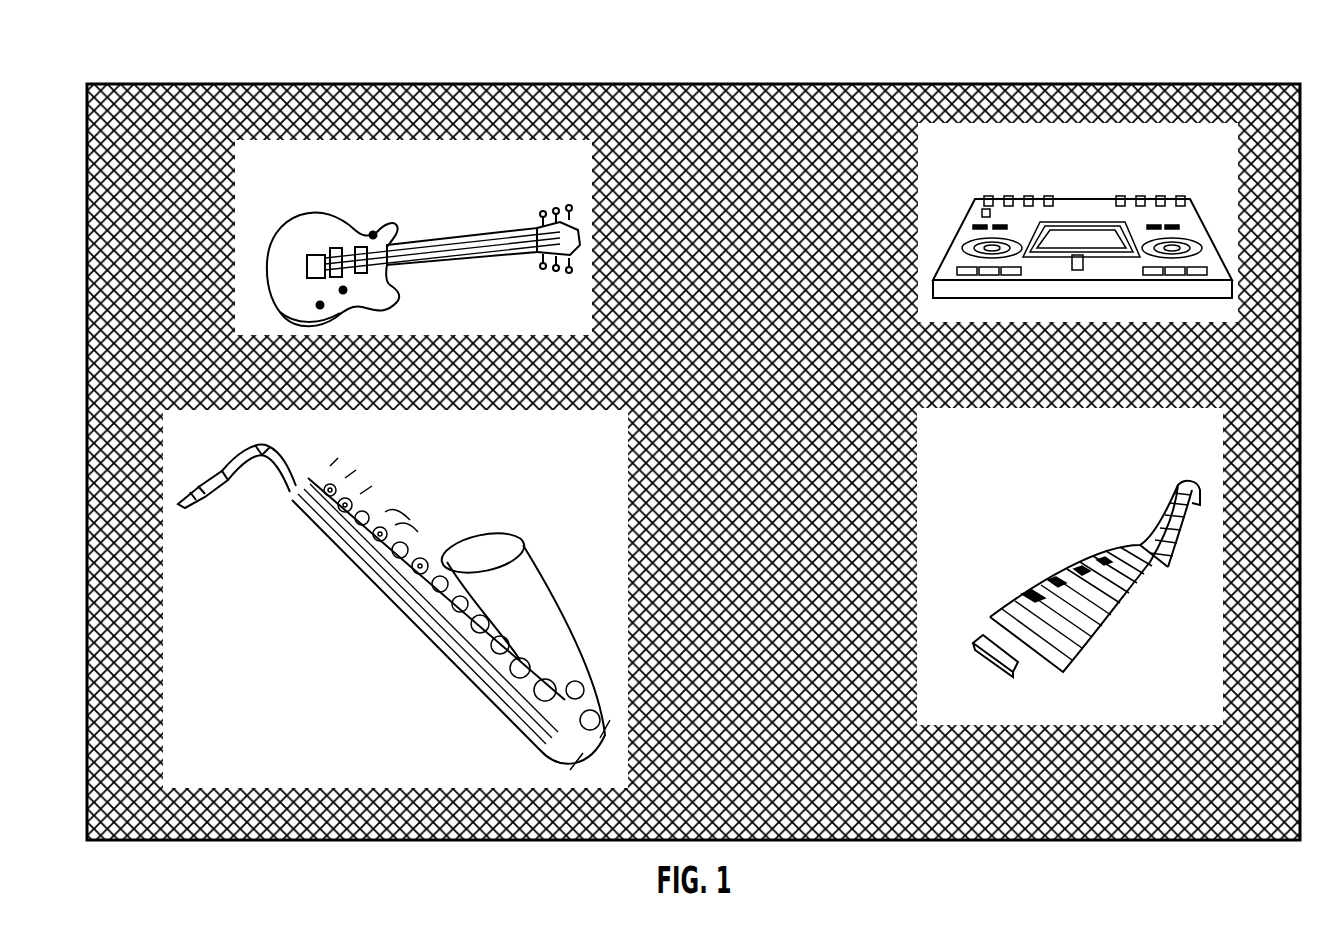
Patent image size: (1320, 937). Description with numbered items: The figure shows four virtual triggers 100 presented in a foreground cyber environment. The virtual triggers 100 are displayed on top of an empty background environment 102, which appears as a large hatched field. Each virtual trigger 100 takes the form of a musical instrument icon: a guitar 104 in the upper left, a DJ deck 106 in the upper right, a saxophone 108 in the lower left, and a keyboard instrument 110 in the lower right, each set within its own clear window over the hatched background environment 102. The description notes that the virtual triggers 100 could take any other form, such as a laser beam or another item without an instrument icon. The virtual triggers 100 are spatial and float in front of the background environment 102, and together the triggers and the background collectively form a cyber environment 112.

The virtual trigger 100 is at (474, 187).
The background environment 102 is at (742, 108).
The guitar 104 is at (337, 213).
The DJ deck 106 is at (1082, 198).
The saxophone 108 is at (340, 490).
The keyboard instrument 110 is at (1020, 585).
The cyber environment 112 is at (863, 83).